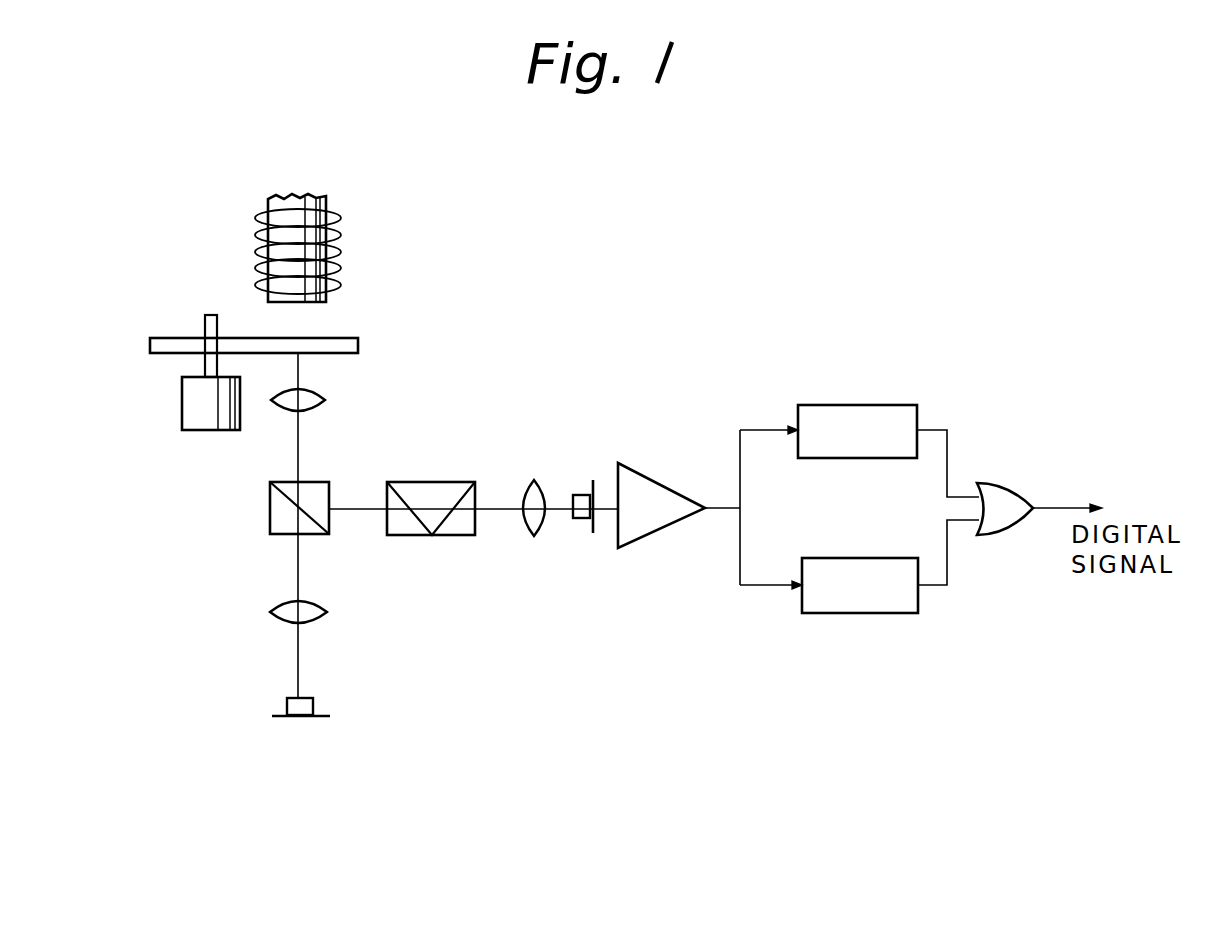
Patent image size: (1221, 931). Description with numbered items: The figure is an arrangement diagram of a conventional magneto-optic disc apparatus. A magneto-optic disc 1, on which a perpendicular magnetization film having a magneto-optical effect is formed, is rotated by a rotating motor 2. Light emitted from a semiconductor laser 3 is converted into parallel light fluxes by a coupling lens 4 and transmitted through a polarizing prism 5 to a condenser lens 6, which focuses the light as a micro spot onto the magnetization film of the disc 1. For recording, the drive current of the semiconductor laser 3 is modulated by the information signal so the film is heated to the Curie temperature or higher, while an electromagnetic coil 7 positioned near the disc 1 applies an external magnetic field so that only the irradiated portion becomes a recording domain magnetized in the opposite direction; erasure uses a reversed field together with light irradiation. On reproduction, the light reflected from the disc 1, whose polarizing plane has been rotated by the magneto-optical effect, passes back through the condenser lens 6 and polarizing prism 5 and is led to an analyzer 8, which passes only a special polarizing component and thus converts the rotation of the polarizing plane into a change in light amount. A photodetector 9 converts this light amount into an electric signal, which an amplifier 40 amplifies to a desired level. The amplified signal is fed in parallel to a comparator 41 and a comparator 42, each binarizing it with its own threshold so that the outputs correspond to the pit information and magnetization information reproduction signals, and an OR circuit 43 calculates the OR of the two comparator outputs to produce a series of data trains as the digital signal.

The magneto-optic disc 1 is at (358, 340).
The rotating motor 2 is at (205, 432).
The semiconductor laser 3 is at (314, 705).
The coupling lens 4 is at (328, 609).
The polarizing prism 5 is at (322, 482).
The condenser lens 6 is at (326, 400).
The electromagnetic coil 7 is at (336, 210).
The analyzer 8 is at (455, 480).
The photodetector 9 is at (580, 520).
The amplifier 40 is at (660, 473).
The comparator 41 is at (855, 408).
The comparator 42 is at (840, 560).
The OR circuit 43 is at (1010, 483).